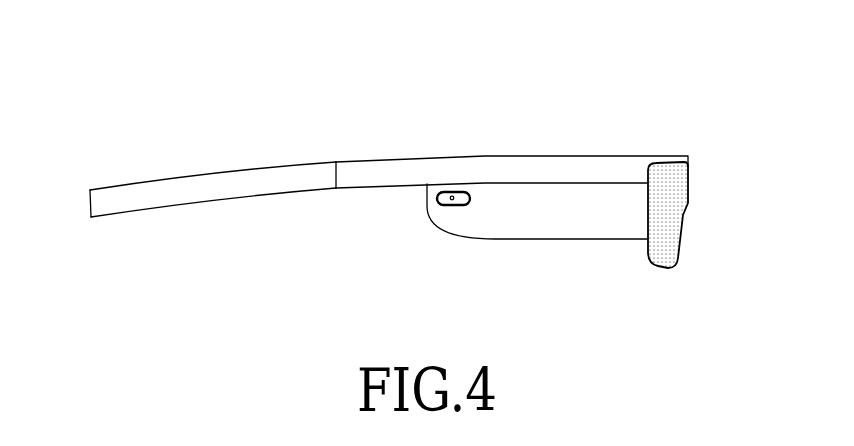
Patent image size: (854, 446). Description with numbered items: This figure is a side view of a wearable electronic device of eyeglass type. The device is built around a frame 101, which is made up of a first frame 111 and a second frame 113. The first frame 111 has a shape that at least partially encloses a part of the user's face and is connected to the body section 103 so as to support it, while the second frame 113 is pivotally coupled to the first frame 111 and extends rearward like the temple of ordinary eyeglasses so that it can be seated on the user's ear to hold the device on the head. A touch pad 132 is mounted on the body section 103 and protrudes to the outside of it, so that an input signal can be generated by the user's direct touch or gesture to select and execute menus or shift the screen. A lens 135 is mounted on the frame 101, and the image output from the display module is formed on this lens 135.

The frame 101 is at (389, 124).
The second frame 113 is at (262, 170).
The first frame 111 is at (512, 131).
The body section 103 is at (575, 225).
The touch pad 132 is at (452, 205).
The lens 135 is at (686, 218).